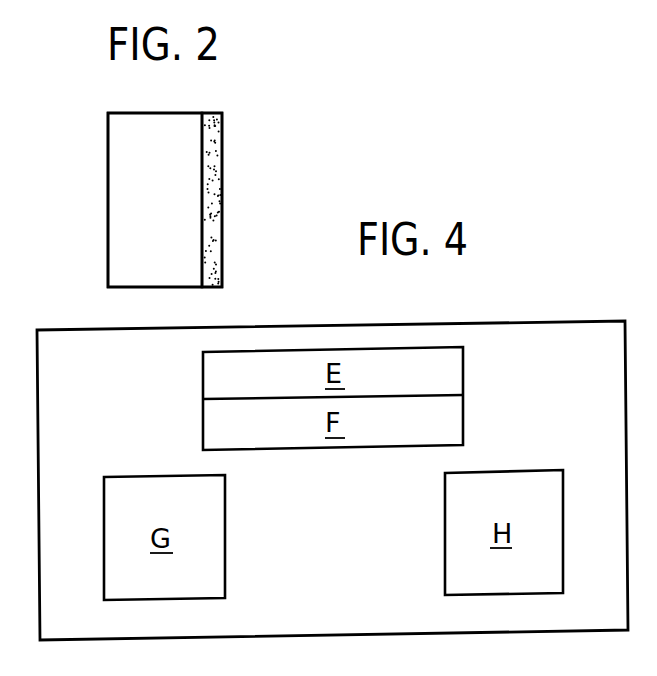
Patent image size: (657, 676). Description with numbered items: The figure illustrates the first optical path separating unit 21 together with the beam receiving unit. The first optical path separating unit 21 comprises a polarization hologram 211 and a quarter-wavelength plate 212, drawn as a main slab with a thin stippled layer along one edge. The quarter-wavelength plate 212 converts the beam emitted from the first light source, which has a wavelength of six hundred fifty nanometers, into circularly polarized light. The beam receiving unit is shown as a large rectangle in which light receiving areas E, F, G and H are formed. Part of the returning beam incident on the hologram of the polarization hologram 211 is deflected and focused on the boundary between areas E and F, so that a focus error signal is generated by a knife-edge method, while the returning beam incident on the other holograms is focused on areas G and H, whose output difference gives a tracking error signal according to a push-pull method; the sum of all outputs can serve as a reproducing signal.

The first optical path separating unit 21 is at (245, 143).
The polarization hologram 211 is at (115, 185).
The ¼-wavelength plate 212 is at (220, 185).